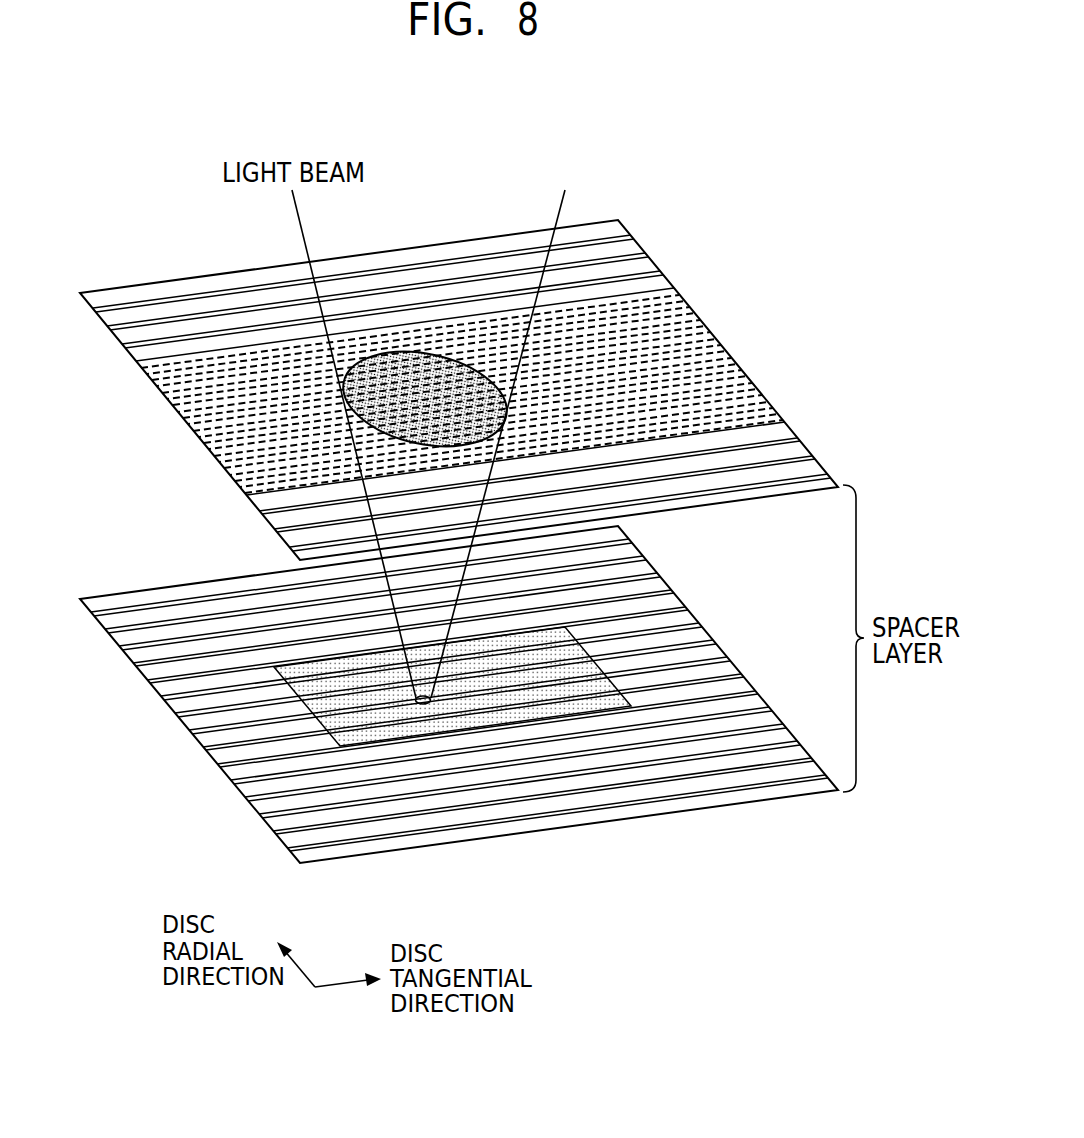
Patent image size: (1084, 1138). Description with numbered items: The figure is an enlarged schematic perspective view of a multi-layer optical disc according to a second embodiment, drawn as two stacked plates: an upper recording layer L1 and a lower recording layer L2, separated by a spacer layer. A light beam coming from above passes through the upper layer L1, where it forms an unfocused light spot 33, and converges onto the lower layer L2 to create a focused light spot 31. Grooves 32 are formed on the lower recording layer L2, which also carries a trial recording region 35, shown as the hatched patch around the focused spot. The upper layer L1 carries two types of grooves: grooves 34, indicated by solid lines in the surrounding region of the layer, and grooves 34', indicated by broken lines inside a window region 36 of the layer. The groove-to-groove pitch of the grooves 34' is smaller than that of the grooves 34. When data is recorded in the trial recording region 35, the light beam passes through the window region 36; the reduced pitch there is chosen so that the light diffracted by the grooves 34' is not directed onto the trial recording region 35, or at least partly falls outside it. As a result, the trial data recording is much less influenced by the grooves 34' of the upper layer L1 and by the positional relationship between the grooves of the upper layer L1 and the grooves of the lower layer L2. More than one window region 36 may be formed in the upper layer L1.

The upper recording layer L1 is at (493, 359).
The lower recording layer L2 is at (459, 712).
The light spot 31 is at (432, 706).
The grooves 32 is at (130, 612).
The unfocused light spot 33 is at (421, 360).
The grooves 34 is at (462, 358).
The grooves 34' is at (462, 353).
The trial recording region 35 is at (557, 708).
The window region 36 is at (521, 354).